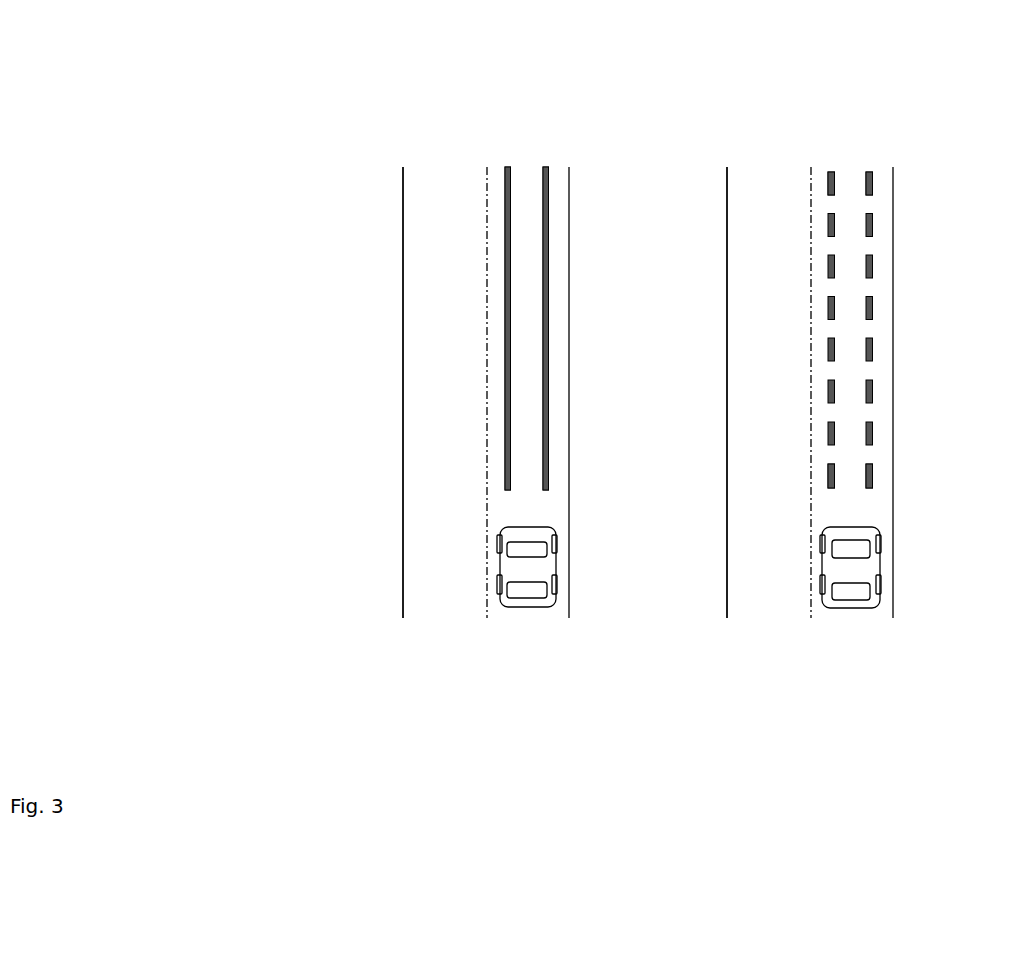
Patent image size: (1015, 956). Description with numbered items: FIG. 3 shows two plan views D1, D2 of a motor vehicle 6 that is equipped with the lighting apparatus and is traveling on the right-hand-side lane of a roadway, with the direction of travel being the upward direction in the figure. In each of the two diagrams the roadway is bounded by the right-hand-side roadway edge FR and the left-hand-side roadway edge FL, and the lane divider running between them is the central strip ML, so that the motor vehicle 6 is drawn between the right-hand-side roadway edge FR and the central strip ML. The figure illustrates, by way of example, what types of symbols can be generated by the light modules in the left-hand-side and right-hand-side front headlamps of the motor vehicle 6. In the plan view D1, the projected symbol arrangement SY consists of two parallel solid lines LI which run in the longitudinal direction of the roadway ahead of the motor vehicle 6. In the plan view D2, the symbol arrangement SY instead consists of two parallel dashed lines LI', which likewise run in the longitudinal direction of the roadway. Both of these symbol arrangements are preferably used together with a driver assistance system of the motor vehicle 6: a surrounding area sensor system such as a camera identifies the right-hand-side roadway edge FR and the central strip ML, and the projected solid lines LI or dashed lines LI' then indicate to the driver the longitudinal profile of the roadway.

The plan view D1 is at (477, 117).
The plan view D2 is at (796, 114).
The solid lines LI is at (527, 294).
The dashed lines LI' is at (850, 297).
The central strip ML is at (487, 338).
The symbol arrangement SY is at (562, 384).
The right-hand-side roadway edge FR is at (569, 503).
The left-hand-side roadway edge FL is at (403, 583).
The motor vehicle 6 is at (528, 608).